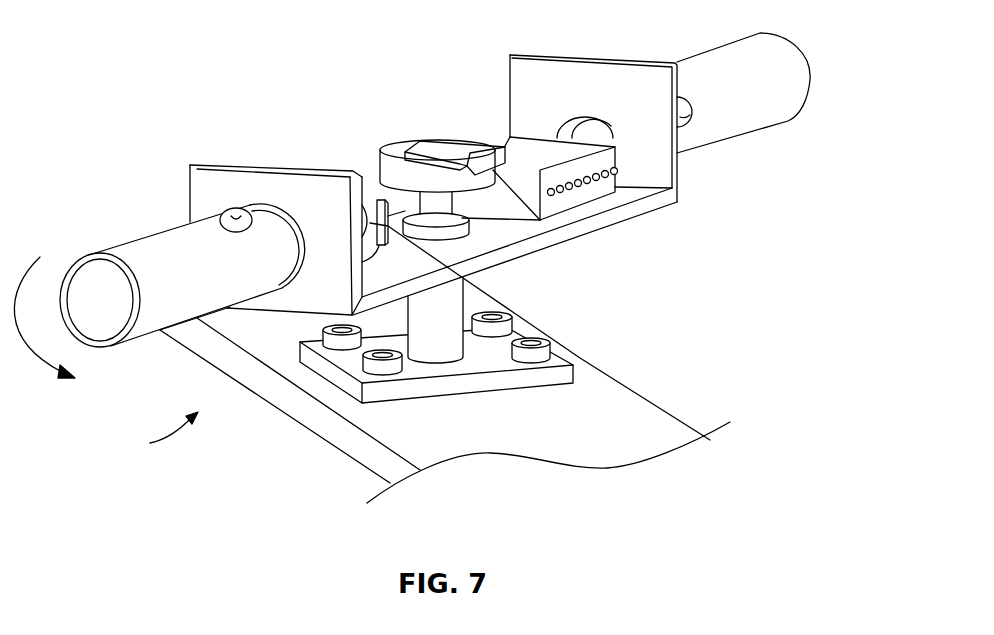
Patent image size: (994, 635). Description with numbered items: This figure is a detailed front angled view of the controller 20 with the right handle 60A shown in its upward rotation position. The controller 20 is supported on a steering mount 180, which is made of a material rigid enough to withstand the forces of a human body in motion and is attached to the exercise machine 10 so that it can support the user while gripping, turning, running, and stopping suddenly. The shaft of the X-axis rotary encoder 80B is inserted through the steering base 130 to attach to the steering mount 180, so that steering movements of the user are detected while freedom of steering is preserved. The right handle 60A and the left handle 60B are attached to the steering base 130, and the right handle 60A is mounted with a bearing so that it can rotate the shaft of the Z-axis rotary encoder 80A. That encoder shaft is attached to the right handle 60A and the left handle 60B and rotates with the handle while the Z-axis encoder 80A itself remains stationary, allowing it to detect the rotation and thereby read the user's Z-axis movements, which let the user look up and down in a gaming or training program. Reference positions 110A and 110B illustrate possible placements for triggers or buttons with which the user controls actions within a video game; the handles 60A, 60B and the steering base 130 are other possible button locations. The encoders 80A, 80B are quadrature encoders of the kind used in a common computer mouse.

The exercise machine 10 is at (663, 443).
The controller 20 is at (156, 434).
The right handle 60A is at (137, 250).
The left handle 60B is at (780, 102).
The Z-axis rotary encoder 80A is at (463, 278).
The X-axis rotary encoder 80B is at (397, 148).
The trigger or button placement 110A is at (233, 213).
The trigger or button placement 110B is at (693, 117).
The steering base 130 is at (525, 88).
The steering mount 180 is at (483, 367).